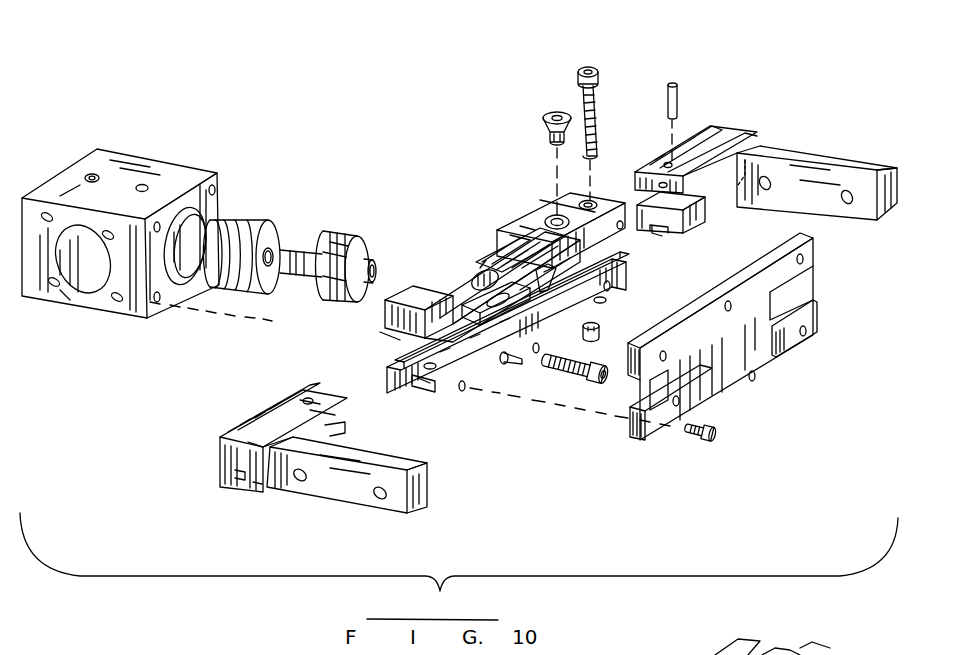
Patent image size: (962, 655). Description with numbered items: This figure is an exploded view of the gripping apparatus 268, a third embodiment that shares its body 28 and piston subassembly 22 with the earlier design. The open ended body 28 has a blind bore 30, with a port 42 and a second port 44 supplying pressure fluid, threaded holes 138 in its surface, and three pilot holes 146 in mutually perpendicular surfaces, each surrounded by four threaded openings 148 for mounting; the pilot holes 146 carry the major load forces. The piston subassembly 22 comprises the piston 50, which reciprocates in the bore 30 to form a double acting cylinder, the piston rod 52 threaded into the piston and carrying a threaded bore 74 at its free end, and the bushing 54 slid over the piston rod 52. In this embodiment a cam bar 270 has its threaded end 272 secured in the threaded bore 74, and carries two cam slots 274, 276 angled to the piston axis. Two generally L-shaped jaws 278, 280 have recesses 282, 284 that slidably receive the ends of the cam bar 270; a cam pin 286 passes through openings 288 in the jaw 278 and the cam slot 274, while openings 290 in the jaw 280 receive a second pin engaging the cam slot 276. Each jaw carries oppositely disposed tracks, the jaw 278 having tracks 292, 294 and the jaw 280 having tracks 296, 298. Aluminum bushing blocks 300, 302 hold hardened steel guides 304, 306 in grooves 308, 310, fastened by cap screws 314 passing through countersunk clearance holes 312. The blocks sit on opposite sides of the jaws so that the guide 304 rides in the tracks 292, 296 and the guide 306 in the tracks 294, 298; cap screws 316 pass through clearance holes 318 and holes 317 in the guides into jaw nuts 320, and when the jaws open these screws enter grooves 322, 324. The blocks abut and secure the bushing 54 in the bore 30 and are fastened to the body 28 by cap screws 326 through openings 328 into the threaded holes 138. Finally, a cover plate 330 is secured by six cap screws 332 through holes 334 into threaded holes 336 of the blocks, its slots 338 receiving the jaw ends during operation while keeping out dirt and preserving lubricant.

The piston subassembly 22 is at (228, 320).
The body 28 is at (152, 182).
The blind bore 30 is at (185, 247).
The port 42 is at (142, 185).
The second port 44 is at (90, 175).
The piston 50 is at (275, 238).
The piston rod 52 is at (340, 262).
The bushing 54 is at (350, 232).
The threaded bore 74 is at (372, 268).
The threaded holes 138 is at (158, 302).
The pilot holes 146 is at (86, 280).
The threaded openings 148 is at (118, 302).
The gripping apparatus 268 is at (383, 72).
The cam bar 270 is at (483, 272).
The threaded end 272 is at (475, 260).
The cam slot 274 is at (498, 296).
The cam slot 276 is at (465, 300).
The jaw 278 is at (842, 168).
The jaw 280 is at (343, 492).
The recess 282 is at (700, 222).
The recess 284 is at (342, 424).
The cam pin 286 is at (678, 86).
The openings 288 is at (661, 183).
The openings 290 is at (310, 396).
The track 292 is at (712, 124).
The track 294 is at (665, 233).
The track 296 is at (248, 440).
The track 298 is at (252, 484).
The bushing block 300 is at (515, 222).
The bushing block 302 is at (440, 400).
The guide 304 is at (390, 336).
The guide 306 is at (425, 378).
The groove 308 is at (422, 306).
The groove 310 is at (432, 384).
The countersunk clearance holes 312 is at (553, 218).
The cap screws 314 is at (556, 112).
The cap screws 316 is at (598, 72).
The holes 317 is at (648, 268).
The clearance holes 318 is at (592, 200).
The jaw nuts 320 is at (600, 332).
The groove 322 is at (733, 136).
The groove 324 is at (242, 478).
The cap screws 326 is at (578, 378).
The openings 328 is at (604, 303).
The cover plate 330 is at (778, 348).
The cap screws 332 is at (708, 440).
The holes 334 is at (802, 264).
The threaded holes 336 is at (622, 229).
The slots 338 is at (632, 414).